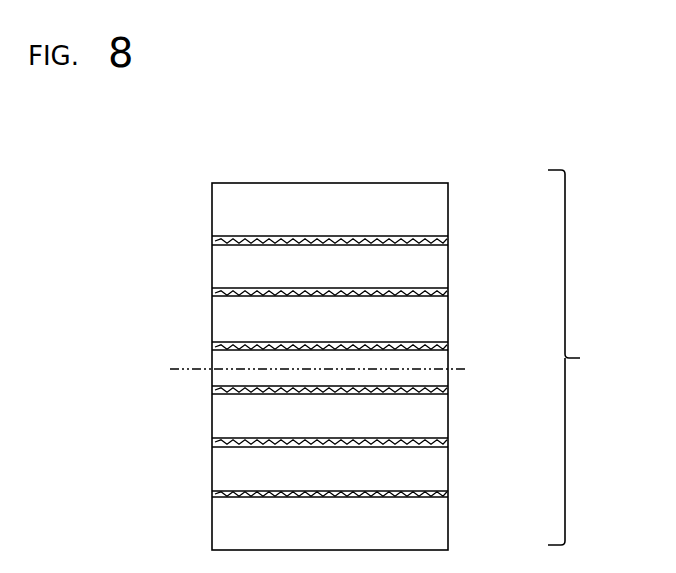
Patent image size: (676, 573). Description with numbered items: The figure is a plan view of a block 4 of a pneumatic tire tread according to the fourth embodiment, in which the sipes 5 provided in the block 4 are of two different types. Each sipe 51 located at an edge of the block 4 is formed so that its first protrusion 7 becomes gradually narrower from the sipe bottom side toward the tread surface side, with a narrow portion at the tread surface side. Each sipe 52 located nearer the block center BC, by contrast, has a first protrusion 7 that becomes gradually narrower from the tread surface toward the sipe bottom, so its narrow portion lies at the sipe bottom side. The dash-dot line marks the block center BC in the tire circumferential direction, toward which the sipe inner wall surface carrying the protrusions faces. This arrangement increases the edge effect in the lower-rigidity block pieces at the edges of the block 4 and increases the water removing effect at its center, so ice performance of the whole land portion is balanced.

The block 4 is at (405, 197).
The sipe 5 is at (579, 357).
The first protrusion 7 is at (253, 293).
The sipe at an edge of the block 51 is at (433, 238).
The sipe at a center of the block 52 is at (433, 292).
The block center BC is at (294, 374).